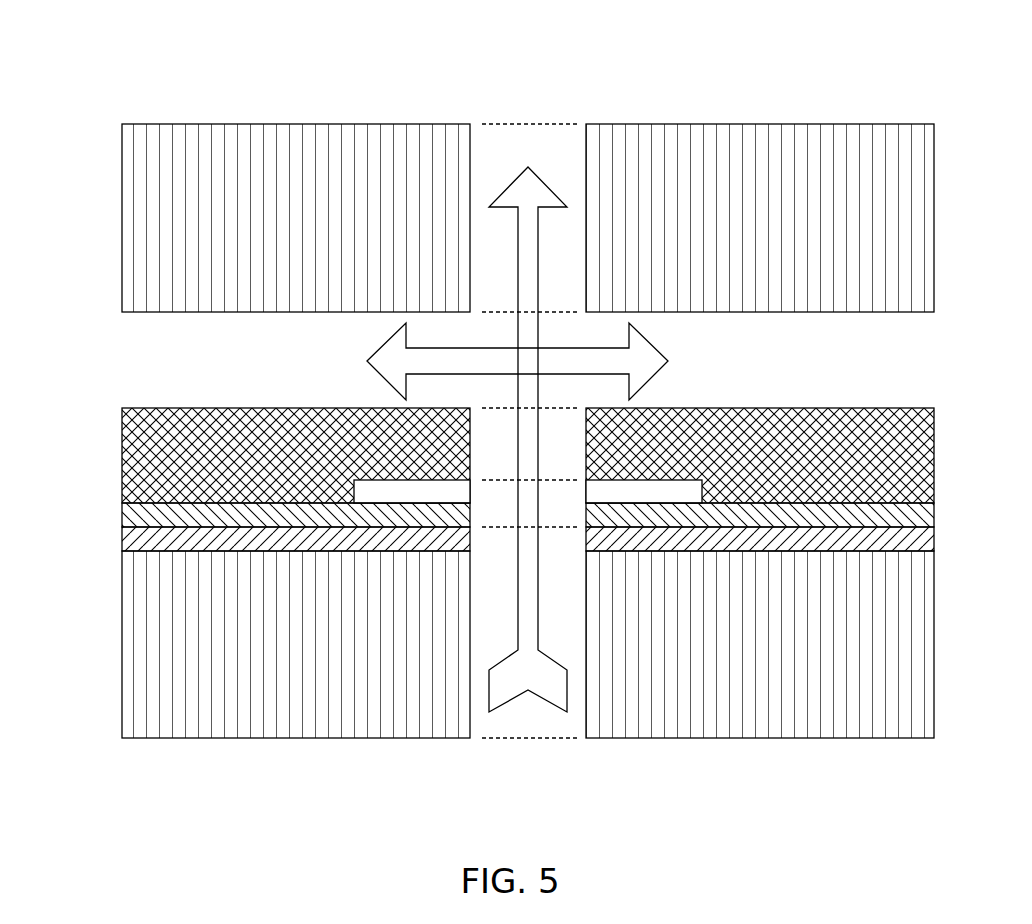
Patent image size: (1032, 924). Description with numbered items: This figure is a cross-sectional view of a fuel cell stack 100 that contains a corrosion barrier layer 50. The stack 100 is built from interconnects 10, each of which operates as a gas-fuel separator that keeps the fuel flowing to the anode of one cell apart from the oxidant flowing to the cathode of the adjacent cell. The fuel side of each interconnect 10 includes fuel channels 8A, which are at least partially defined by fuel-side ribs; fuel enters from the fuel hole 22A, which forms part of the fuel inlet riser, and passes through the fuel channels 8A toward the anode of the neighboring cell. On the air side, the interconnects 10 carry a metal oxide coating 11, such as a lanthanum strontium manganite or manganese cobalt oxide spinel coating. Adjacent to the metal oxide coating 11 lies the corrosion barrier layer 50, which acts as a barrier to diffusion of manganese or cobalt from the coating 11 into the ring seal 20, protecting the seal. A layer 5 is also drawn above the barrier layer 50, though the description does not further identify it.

The fuel cell stack 100 is at (270, 84).
The interconnect 10 is at (121, 186).
The fuel channels 8A is at (153, 358).
The electrode layer 5 is at (128, 455).
The corrosion barrier layer 50 is at (121, 511).
The metal oxide coating 11 is at (130, 548).
The ring seal 20 is at (613, 487).
The fuel hole 22A is at (511, 143).